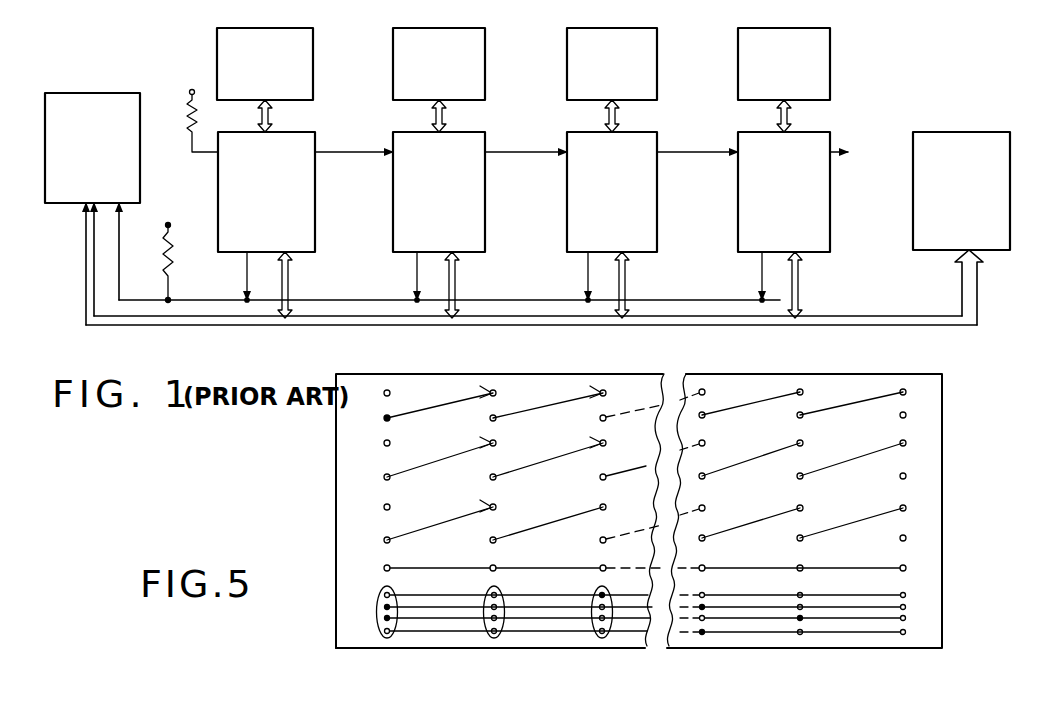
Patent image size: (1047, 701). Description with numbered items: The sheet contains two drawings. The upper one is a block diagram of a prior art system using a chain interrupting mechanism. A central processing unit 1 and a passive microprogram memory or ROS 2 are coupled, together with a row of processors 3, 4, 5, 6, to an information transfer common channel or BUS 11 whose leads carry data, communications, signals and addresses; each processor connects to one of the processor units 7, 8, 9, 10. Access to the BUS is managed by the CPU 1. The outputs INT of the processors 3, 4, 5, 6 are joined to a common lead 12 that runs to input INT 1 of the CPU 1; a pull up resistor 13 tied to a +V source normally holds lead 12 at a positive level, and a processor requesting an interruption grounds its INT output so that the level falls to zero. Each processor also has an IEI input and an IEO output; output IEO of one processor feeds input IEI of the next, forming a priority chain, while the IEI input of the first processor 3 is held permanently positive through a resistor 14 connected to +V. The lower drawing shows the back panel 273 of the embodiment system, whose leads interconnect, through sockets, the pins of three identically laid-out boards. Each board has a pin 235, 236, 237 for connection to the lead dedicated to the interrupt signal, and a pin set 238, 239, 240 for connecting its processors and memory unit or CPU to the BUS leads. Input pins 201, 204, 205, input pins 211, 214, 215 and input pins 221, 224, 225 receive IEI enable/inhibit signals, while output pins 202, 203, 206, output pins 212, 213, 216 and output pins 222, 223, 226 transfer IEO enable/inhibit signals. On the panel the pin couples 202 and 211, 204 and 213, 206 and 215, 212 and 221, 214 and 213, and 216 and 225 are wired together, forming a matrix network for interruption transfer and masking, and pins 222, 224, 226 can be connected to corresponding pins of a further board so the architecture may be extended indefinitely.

In FIG. 1, the central processing unit 1 is at (45, 188).
In FIG. 1, the microprogram memory 2 is at (913, 187).
In FIG. 1, the processor 3 is at (315, 197).
In FIG. 1, the processor 4 is at (485, 197).
In FIG. 1, the processor 5 is at (657, 197).
In FIG. 1, the processor 6 is at (830, 197).
In FIG. 1, the processor unit 7 is at (313, 70).
In FIG. 1, the processor unit 8 is at (485, 70).
In FIG. 1, the processor unit 9 is at (657, 70).
In FIG. 1, the processor unit 10 is at (830, 70).
In FIG. 1, the BUS 11 is at (157, 330).
In FIG. 1, the common lead 12 is at (328, 300).
In FIG. 1, the pull up resistor 13 is at (163, 256).
In FIG. 1, the resistor 14 is at (187, 116).
In FIG. 5, the input pin 201 is at (369, 395).
In FIG. 5, the output pin 202 is at (420, 410).
In FIG. 5, the output pin 203 is at (369, 445).
In FIG. 5, the input pin 204 is at (420, 465).
In FIG. 5, the input pin 205 is at (369, 509).
In FIG. 5, the output pin 206 is at (420, 528).
In FIG. 5, the input pin 211 is at (473, 388).
In FIG. 5, the output pin 212 is at (528, 410).
In FIG. 5, the output pin 213 is at (470, 444).
In FIG. 5, the input pin 214 is at (526, 464).
In FIG. 5, the input pin 215 is at (474, 503).
In FIG. 5, the output pin 216 is at (529, 528).
In FIG. 5, the input pin 221 is at (584, 388).
In FIG. 5, the output pin 222 is at (614, 414).
In FIG. 5, the output pin 223 is at (579, 444).
In FIG. 5, the input pin 224 is at (605, 475).
In FIG. 5, the input pin 225 is at (584, 501).
In FIG. 5, the output pin 226 is at (615, 536).
In FIG. 5, the pin 235 is at (419, 569).
In FIG. 5, the pin 236 is at (490, 566).
In FIG. 5, the pin 237 is at (601, 565).
In FIG. 5, the pin set 238 is at (378, 626).
In FIG. 5, the pin set 239 is at (492, 638).
In FIG. 5, the pin set 240 is at (598, 638).
In FIG. 5, the back panel 273 is at (336, 634).